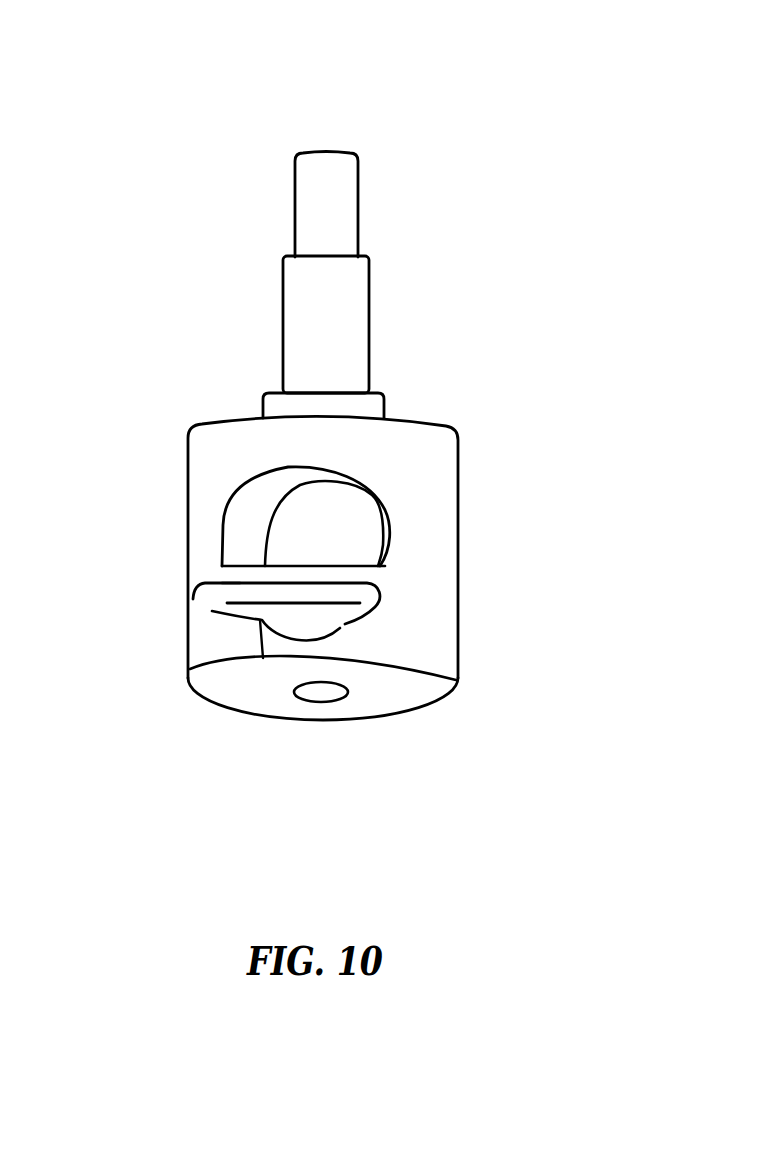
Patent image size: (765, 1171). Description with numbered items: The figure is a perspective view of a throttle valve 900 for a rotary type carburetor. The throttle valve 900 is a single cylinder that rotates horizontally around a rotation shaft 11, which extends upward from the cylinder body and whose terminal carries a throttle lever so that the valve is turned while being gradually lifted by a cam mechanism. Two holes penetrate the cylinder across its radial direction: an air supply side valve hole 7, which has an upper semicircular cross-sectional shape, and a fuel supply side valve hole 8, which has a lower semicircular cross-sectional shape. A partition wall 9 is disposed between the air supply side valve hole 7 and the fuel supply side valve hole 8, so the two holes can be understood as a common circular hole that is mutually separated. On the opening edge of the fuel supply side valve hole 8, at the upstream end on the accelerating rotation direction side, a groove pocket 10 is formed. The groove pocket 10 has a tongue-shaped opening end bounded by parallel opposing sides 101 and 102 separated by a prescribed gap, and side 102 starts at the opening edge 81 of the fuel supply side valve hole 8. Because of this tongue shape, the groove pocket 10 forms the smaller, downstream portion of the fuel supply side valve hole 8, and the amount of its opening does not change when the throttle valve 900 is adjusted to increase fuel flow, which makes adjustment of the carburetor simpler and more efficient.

The throttle valve 900 is at (602, 66).
The rotation shaft 11 is at (337, 325).
The air supply side valve hole 7 is at (309, 537).
The partition wall 9 is at (300, 574).
The fuel supply side valve hole 8 is at (332, 625).
The opening edge 81 is at (261, 620).
The groove pocket 10 is at (216, 603).
The side 101 is at (225, 583).
The side 102 is at (207, 620).